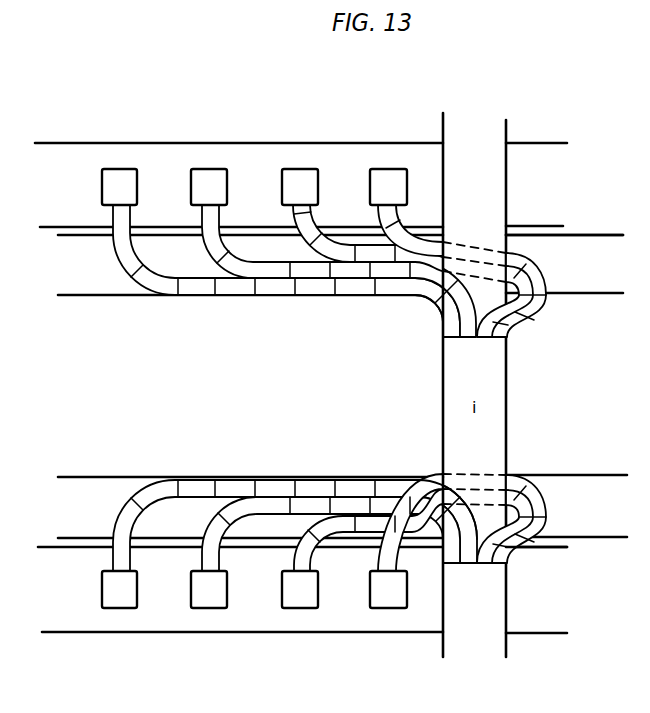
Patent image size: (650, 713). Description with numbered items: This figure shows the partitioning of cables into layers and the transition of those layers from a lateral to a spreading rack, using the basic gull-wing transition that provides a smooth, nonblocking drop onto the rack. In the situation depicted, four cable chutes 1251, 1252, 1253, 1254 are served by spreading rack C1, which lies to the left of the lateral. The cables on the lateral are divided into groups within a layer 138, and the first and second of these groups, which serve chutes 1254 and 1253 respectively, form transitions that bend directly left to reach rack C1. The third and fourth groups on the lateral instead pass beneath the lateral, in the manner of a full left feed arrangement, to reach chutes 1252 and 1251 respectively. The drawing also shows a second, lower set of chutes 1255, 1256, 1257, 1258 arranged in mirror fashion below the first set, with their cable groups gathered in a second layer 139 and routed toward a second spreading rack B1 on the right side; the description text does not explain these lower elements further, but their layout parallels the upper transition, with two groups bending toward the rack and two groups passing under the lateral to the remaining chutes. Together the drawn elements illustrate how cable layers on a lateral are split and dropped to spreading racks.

The cable chute 1251 is at (388, 168).
The cable chute 1252 is at (297, 168).
The cable chute 1253 is at (212, 168).
The cable chute 1254 is at (118, 168).
The terminal unit 1255 is at (385, 608).
The terminal unit 1256 is at (300, 608).
The terminal unit 1257 is at (212, 608).
The terminal unit 1258 is at (124, 608).
The layer 138 is at (420, 298).
The cable bundle bend 139 is at (417, 473).
The spreading rack C1 is at (573, 282).
The channel B1 is at (585, 525).